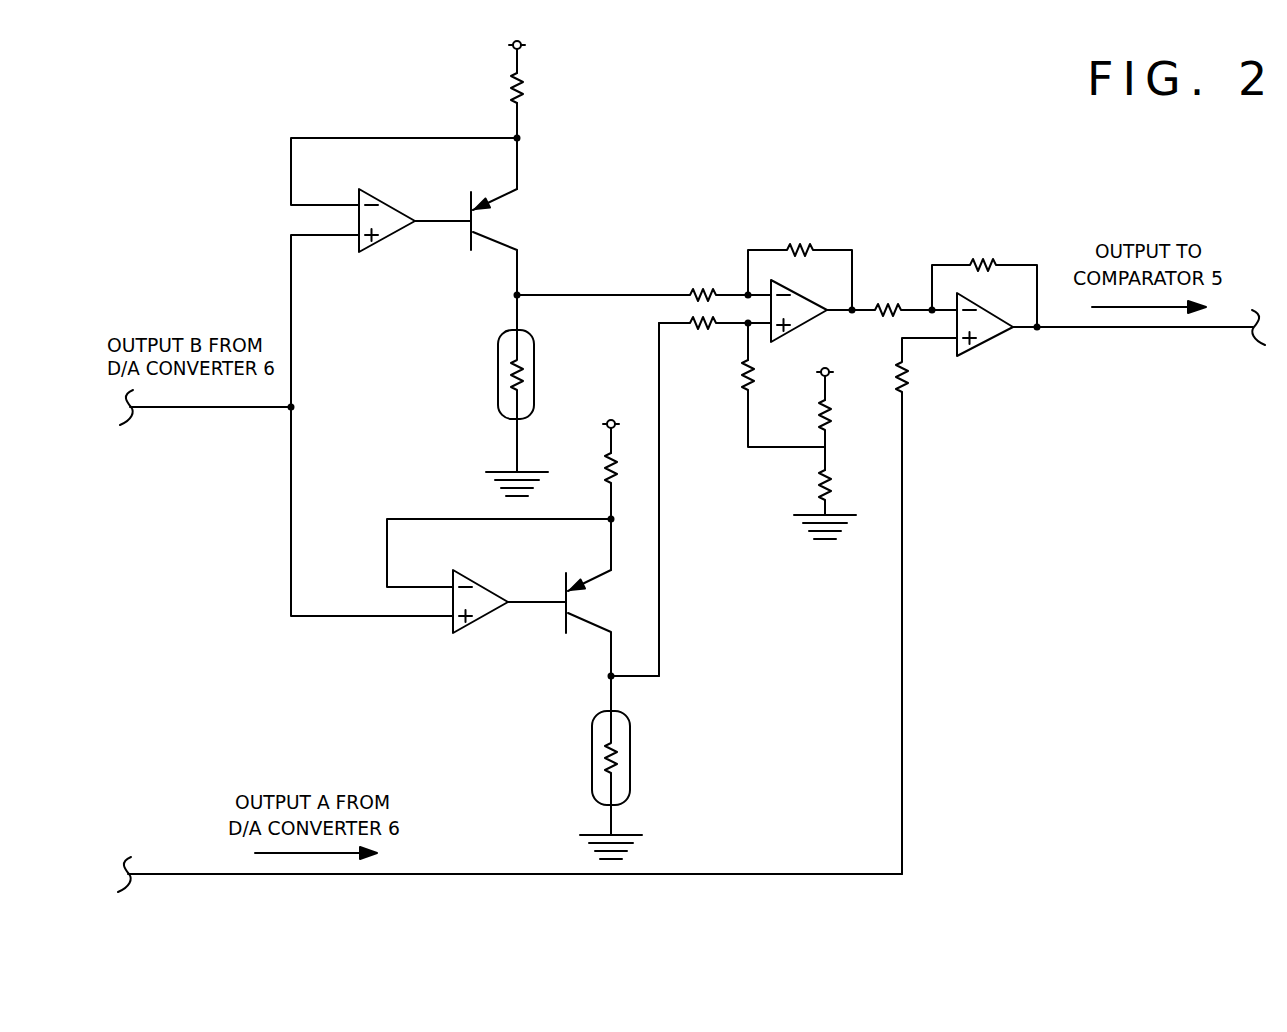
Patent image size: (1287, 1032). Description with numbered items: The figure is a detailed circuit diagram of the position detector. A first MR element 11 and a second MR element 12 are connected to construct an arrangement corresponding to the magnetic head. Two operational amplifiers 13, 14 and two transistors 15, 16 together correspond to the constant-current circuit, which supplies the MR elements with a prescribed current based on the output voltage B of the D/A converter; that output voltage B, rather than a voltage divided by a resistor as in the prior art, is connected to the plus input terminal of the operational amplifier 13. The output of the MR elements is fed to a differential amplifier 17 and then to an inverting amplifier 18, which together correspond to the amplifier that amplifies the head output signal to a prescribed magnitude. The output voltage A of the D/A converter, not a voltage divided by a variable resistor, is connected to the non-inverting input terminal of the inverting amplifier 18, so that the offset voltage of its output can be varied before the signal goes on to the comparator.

The first MR element 11 is at (535, 362).
The second MR element 12 is at (632, 738).
The operational amplifier 13 is at (383, 242).
The operational amplifier 14 is at (487, 582).
The transistor 15 is at (505, 243).
The transistor 16 is at (565, 623).
The differential amplifier 17 is at (807, 323).
The inverting amplifier 18 is at (993, 341).